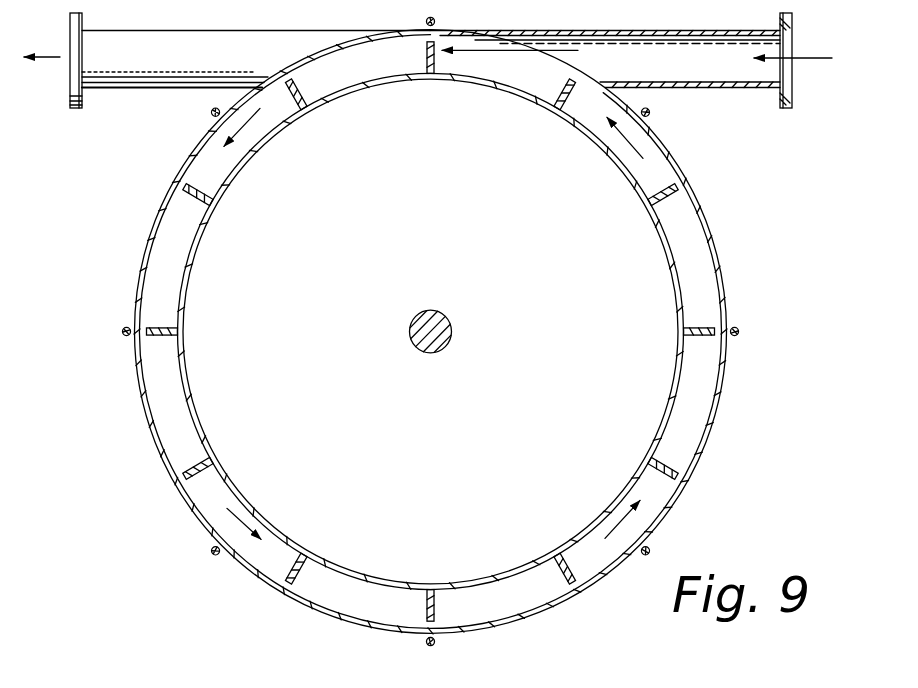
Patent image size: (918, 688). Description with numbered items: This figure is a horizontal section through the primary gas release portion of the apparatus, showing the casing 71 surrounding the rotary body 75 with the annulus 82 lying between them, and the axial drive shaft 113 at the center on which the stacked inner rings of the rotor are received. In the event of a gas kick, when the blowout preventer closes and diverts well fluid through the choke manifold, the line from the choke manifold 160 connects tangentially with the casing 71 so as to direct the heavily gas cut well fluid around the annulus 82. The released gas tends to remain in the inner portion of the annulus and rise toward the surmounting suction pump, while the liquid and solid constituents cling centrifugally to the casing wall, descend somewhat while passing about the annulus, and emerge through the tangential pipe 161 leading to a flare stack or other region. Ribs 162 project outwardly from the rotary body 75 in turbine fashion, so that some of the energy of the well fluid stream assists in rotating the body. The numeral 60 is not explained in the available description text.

The outer annular shell 60 is at (697, 460).
The casing 71 is at (741, 337).
The rotary body 75 is at (666, 229).
The annulus 82 is at (693, 270).
The axial drive shaft 113 is at (451, 329).
The line from the choke manifold 160 is at (744, 88).
The tangential pipe 161 is at (117, 73).
The ribs 162 is at (159, 327).